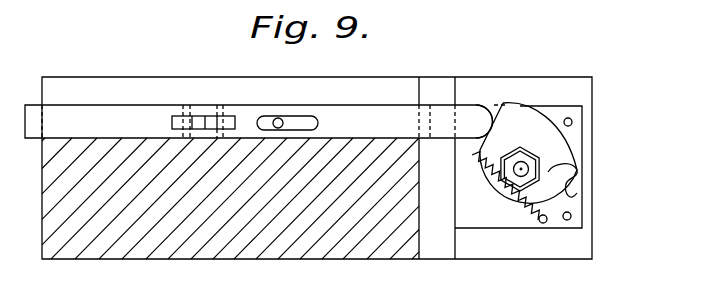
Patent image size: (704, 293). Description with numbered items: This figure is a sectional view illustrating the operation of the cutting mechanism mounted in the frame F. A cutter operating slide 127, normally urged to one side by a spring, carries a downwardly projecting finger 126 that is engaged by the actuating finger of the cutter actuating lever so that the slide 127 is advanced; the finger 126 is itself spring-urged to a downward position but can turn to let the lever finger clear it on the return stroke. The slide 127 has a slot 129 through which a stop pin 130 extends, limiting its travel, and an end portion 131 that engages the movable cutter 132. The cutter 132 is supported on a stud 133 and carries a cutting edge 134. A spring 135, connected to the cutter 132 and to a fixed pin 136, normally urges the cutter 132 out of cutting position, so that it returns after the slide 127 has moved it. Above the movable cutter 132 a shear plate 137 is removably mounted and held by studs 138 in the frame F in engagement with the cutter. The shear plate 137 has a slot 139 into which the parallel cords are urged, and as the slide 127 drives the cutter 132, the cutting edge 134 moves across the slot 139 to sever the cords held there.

The frame F is at (395, 263).
The downwardly projecting finger 126 is at (227, 117).
The cutter operating slide 127 is at (345, 115).
The slot 129 is at (300, 115).
The stop pin 130 is at (278, 118).
The end portion 131 is at (483, 110).
The movable cutter 132 is at (532, 117).
The stud 133 is at (528, 168).
The cutting edge 134 is at (566, 194).
The spring 135 is at (517, 206).
The fixed pin 136 is at (547, 223).
The shear plate 137 is at (582, 117).
The studs 138 is at (613, 223).
The slot 139 is at (578, 175).